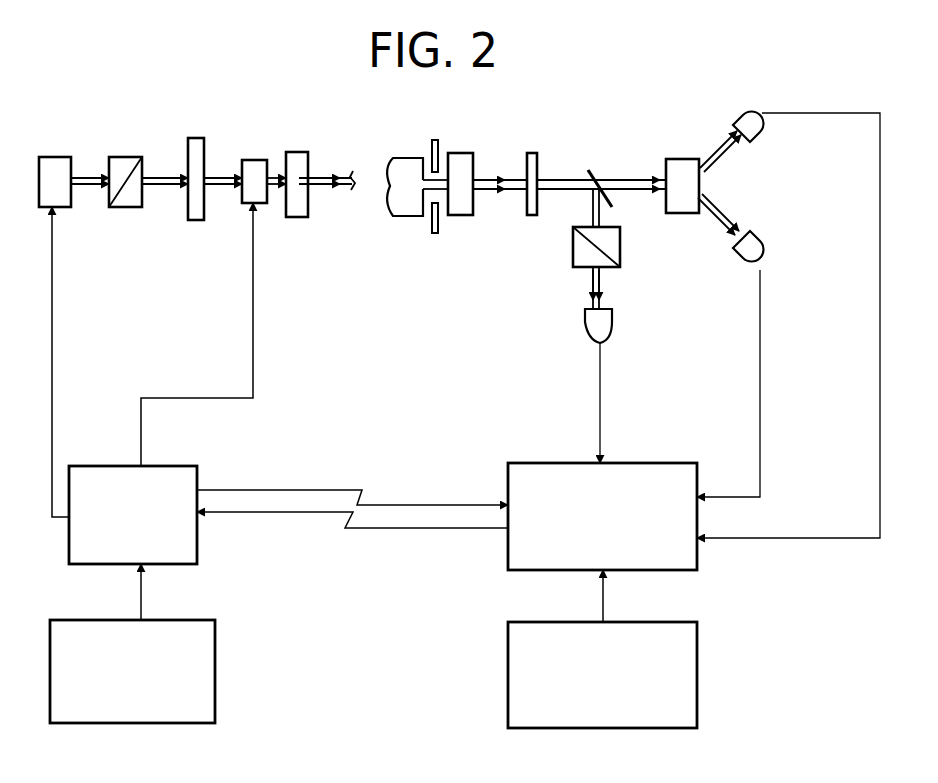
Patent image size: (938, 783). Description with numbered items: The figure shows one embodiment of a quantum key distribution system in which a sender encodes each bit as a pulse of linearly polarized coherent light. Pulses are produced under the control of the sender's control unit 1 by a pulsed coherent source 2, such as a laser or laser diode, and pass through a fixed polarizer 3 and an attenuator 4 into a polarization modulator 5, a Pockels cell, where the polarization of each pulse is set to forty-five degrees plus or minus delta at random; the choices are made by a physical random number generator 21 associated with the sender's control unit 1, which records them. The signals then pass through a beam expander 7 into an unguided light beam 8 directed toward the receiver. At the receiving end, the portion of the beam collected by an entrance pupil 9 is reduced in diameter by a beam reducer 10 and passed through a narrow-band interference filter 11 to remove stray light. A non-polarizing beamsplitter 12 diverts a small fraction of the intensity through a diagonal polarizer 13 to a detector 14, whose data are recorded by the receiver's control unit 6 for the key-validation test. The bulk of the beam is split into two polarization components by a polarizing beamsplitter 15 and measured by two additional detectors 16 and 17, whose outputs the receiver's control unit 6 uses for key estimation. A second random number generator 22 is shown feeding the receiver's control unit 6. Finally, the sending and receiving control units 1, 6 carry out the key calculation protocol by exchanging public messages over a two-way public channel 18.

The sender's control unit 1 is at (77, 534).
The pulsed coherent source 2 is at (55, 157).
The fixed polarizer 3 is at (125, 157).
The attenuator 4 is at (193, 138).
The polarization modulator 5 is at (254, 160).
The receiver's control unit 6 is at (520, 549).
The beam expander 7 is at (298, 152).
The unguided light beam 8 is at (368, 160).
The entrance pupil 9 is at (437, 140).
The beam reducer 10 is at (473, 160).
The narrow-band interference filter 11 is at (537, 158).
The non-polarizing beamsplitter 12 is at (600, 174).
The diagonal polarizer 13 is at (620, 258).
The detector 14 is at (612, 326).
The polarizing beamsplitter 15 is at (685, 159).
The detector 16 is at (746, 114).
The detector 17 is at (760, 249).
The two-way public channel 18 is at (332, 510).
The random number generator 21 is at (215, 690).
The random number generator 22 is at (520, 672).